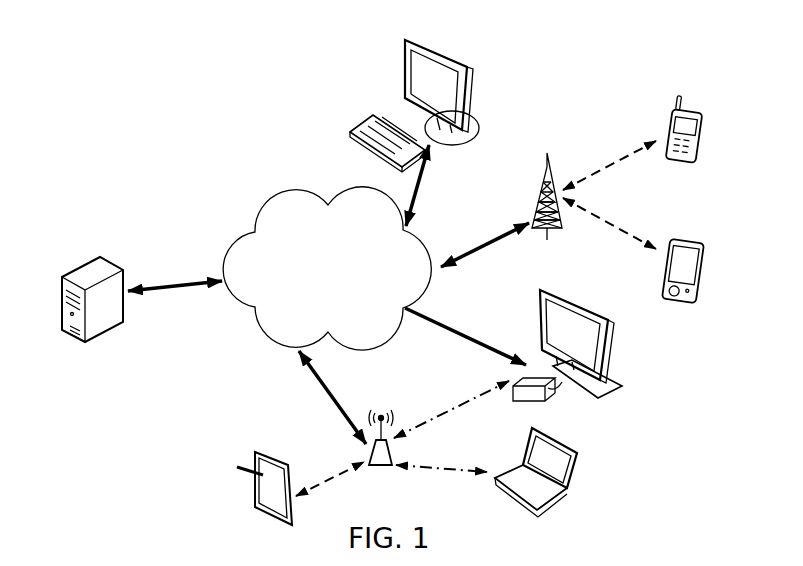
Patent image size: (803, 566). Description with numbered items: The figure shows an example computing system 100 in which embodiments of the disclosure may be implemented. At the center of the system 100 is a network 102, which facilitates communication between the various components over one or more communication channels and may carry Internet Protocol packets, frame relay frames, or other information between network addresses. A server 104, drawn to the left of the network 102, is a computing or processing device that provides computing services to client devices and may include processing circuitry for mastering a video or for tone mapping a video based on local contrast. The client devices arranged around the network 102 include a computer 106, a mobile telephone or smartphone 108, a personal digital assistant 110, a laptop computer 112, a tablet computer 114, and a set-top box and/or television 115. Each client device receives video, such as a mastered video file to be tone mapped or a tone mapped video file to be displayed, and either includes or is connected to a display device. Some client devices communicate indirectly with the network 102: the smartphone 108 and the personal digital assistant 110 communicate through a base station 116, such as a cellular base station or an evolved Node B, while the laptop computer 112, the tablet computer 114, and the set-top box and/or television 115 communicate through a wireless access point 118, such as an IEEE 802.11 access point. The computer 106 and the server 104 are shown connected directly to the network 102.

The computing system 100 is at (193, 79).
The network 102 is at (258, 199).
The server 104 is at (77, 268).
The computer 106 is at (470, 70).
The mobile telephone or smartphone 108 is at (698, 112).
The personal digital assistant (PDA) 110 is at (698, 238).
The laptop computer 112 is at (558, 498).
The tablet computer 114 is at (255, 450).
The set-top box and/or television 115 is at (605, 392).
The base station 116 is at (563, 228).
The wireless access point 118 is at (392, 438).